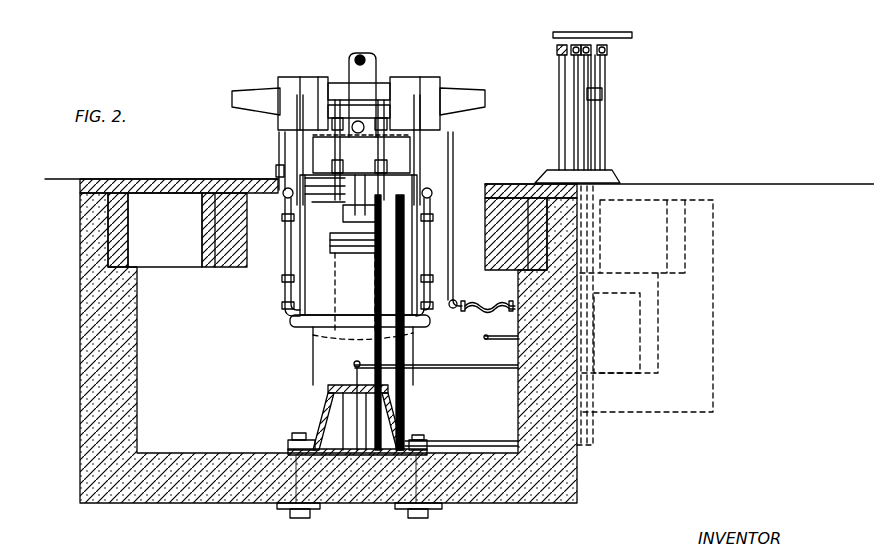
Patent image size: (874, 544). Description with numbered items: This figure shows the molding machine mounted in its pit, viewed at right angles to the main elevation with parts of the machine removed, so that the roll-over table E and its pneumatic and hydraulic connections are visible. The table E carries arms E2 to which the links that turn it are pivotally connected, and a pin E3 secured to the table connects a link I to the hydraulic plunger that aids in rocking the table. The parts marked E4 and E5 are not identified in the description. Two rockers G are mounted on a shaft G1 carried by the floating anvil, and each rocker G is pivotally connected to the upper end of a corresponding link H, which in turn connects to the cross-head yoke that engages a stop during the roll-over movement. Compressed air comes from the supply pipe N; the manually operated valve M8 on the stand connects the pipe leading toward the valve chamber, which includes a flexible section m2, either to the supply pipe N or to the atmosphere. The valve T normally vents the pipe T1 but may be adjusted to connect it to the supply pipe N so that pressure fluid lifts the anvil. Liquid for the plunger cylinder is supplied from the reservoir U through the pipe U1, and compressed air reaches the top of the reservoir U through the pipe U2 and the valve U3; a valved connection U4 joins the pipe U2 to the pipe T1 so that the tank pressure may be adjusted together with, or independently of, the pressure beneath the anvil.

The roll-over table E is at (448, 90).
The arm E2 is at (268, 108).
The pin E3 is at (350, 128).
The cross plate E4 is at (374, 80).
The post E5 is at (366, 56).
The pipe U1 is at (468, 384).
The rocker G is at (278, 143).
The shaft G1 is at (276, 170).
The link I is at (361, 154).
The link H is at (283, 238).
The flexible pipe section m2 is at (500, 313).
The reservoir U is at (617, 333).
The pipe T1 is at (590, 135).
The supply pipe N is at (590, 30).
The valve M8 is at (556, 49).
The valve T is at (597, 40).
The valve U3 is at (608, 56).
The valved connection U4 is at (602, 83).
The pipe U2 is at (607, 152).